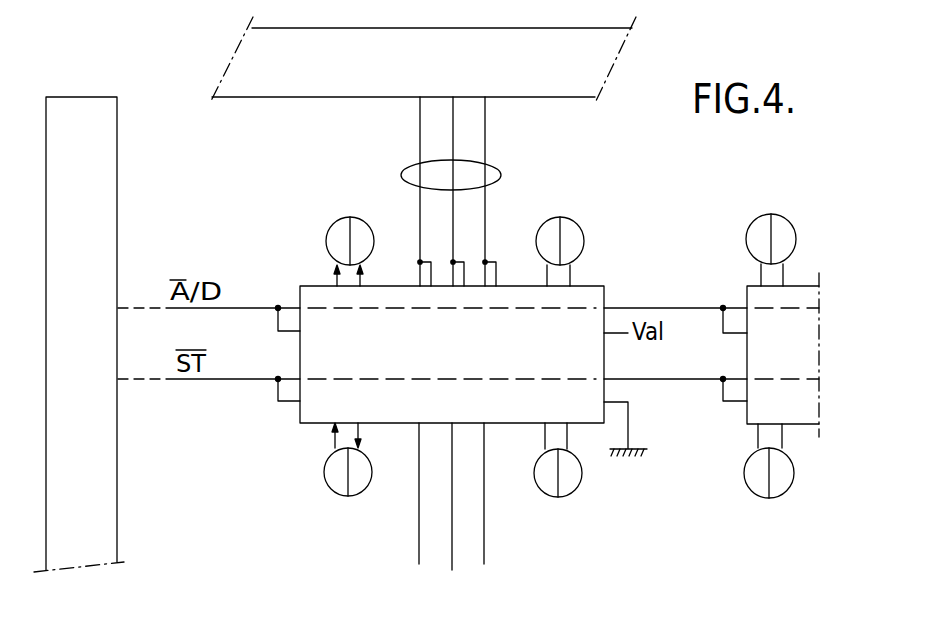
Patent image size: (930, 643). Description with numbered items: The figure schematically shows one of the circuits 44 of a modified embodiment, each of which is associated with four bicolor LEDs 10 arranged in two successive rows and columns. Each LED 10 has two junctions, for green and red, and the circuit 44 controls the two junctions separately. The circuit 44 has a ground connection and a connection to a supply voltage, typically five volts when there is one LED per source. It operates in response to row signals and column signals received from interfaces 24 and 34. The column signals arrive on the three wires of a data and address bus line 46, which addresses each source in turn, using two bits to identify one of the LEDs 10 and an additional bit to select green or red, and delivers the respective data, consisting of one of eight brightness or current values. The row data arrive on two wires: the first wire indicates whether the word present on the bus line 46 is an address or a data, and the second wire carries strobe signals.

The bicolor LED 10 is at (750, 223).
The interface 24 is at (118, 203).
The interface 34 is at (431, 28).
The circuit 44 is at (310, 278).
The data and address bus line 46 is at (500, 170).